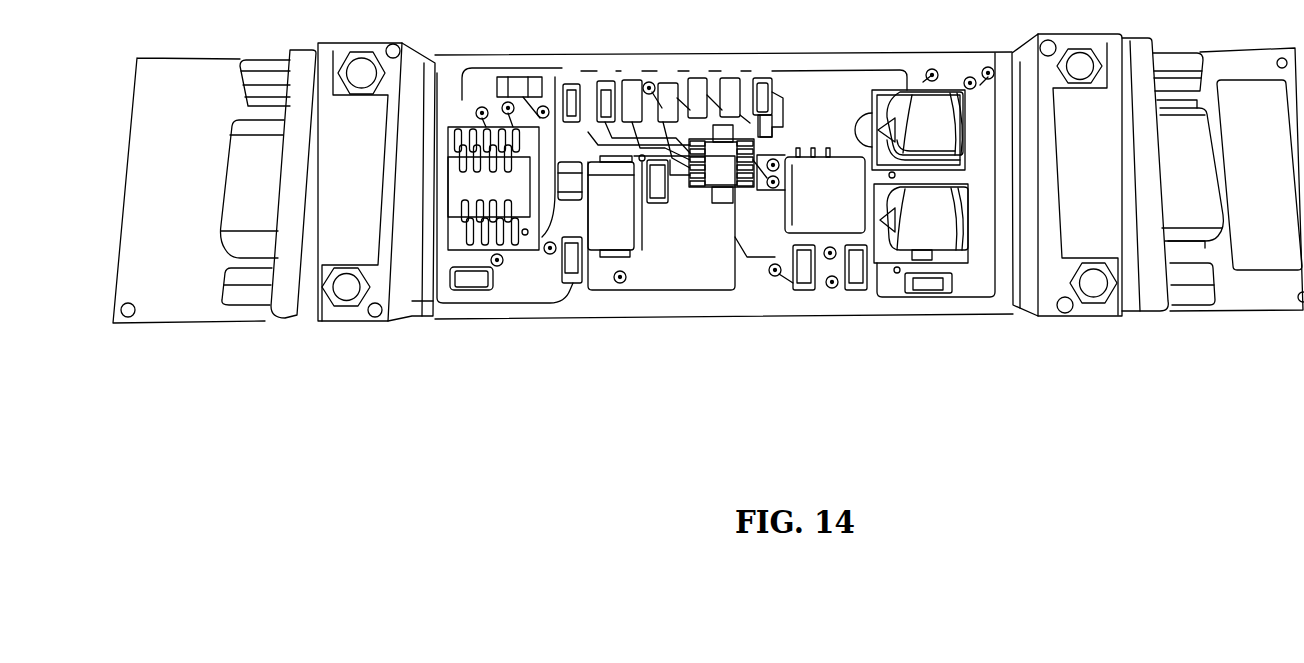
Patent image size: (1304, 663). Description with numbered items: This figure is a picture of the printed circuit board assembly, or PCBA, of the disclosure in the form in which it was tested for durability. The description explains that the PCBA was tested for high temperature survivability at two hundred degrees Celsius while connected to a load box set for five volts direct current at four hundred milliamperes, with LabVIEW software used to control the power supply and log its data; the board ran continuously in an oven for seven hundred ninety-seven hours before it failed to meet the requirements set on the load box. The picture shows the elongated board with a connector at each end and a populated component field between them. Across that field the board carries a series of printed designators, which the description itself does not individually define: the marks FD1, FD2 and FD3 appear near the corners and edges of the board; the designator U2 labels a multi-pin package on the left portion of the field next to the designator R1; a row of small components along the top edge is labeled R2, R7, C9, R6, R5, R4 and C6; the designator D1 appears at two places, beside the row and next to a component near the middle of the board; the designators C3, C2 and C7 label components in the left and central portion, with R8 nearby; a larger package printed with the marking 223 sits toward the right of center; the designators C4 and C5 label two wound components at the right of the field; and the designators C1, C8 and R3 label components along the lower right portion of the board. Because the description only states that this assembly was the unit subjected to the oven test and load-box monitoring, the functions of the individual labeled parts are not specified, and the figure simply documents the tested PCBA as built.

The fiducial mark 1 FD1 is at (146, 302).
The fiducial mark 2 FD2 is at (1279, 293).
The fiducial mark 3 FD3 is at (1259, 161).
The integrated circuit U2 is at (498, 174).
The resistor R1 is at (506, 88).
The resistor R2 is at (572, 91).
The resistor R7 is at (606, 91).
The capacitor C9 is at (638, 91).
The resistor R6 is at (668, 91).
The resistor R5 is at (698, 89).
The resistor R4 is at (730, 89).
The capacitor C6 is at (762, 88).
The diode D1 is at (662, 171).
The capacitor C3 is at (654, 202).
The capacitor C2 is at (611, 220).
The capacitor C7 is at (469, 270).
The resistor R8 is at (557, 262).
The transformer 223 is at (816, 190).
The inductor/capacitor C4 is at (924, 122).
The inductor/capacitor C5 is at (978, 118).
The capacitor C1 is at (792, 279).
The capacitor C8 is at (845, 279).
The resistor R3 is at (935, 280).